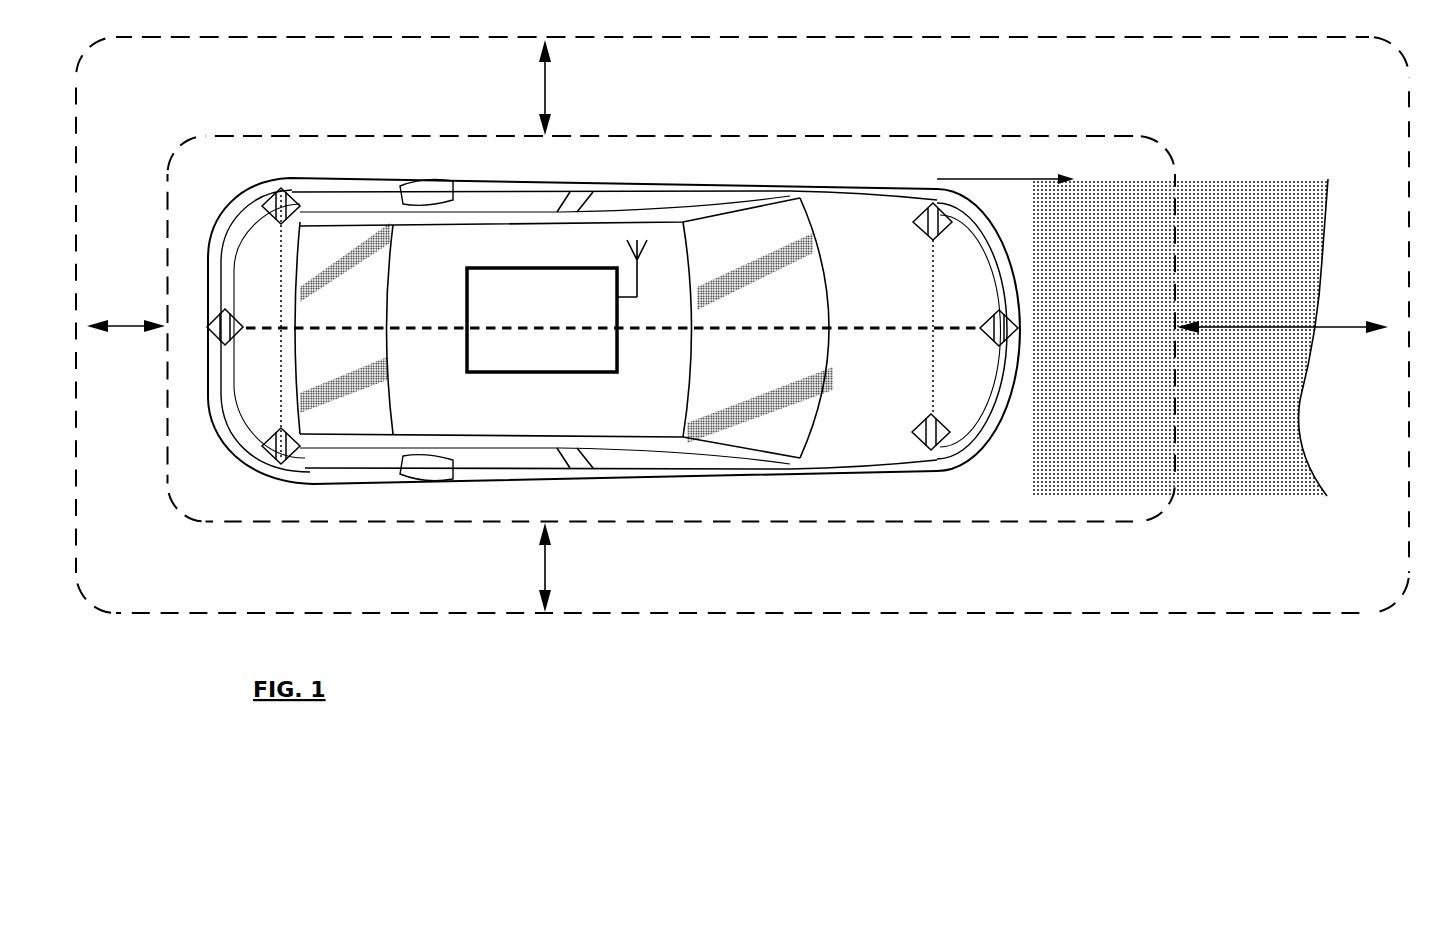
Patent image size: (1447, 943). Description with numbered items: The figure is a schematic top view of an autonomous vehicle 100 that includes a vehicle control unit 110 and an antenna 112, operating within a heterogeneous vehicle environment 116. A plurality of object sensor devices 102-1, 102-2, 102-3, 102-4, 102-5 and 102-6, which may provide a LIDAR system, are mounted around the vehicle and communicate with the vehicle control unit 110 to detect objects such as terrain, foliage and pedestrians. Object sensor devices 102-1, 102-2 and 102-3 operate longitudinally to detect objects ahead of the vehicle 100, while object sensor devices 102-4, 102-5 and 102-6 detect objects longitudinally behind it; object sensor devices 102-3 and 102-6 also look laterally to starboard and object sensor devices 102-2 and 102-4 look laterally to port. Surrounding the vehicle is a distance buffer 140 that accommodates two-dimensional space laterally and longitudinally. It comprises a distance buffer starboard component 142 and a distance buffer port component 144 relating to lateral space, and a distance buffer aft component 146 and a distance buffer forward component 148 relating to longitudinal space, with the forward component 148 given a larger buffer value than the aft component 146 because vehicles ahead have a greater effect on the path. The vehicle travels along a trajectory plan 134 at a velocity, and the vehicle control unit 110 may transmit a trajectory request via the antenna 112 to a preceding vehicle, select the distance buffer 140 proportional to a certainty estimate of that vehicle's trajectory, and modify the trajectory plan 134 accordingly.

The vehicle 100 is at (830, 175).
The object sensor device 102-1 is at (1018, 345).
The object sensor device 102-2 is at (930, 237).
The object sensor device 102-3 is at (927, 418).
The object sensor device 102-4 is at (280, 187).
The object sensor device 102-5 is at (207, 316).
The object sensor device 102-6 is at (262, 441).
The vehicle control unit 110 is at (553, 373).
The antenna 112 is at (637, 288).
The heterogeneous vehicle environment 116 is at (742, 372).
The trajectory plan 134 is at (1180, 337).
The distance buffer 140 is at (672, 362).
The distance buffer starboard component 142 is at (547, 578).
The distance buffer port component 144 is at (540, 125).
The distance buffer aft component 146 is at (122, 330).
The distance buffer forward component 148 is at (1368, 283).